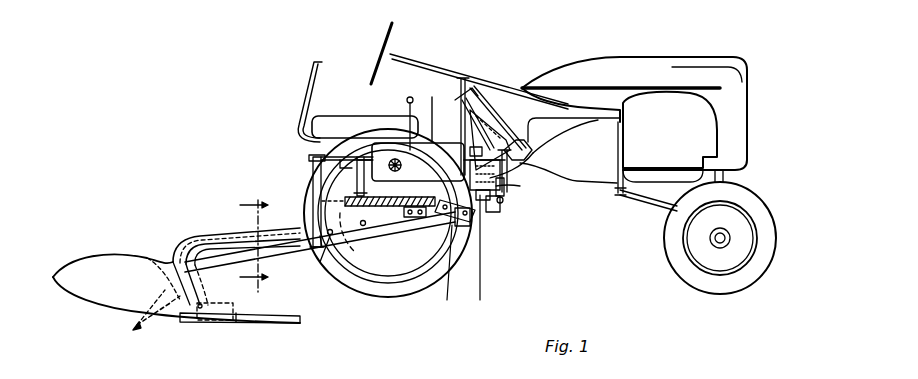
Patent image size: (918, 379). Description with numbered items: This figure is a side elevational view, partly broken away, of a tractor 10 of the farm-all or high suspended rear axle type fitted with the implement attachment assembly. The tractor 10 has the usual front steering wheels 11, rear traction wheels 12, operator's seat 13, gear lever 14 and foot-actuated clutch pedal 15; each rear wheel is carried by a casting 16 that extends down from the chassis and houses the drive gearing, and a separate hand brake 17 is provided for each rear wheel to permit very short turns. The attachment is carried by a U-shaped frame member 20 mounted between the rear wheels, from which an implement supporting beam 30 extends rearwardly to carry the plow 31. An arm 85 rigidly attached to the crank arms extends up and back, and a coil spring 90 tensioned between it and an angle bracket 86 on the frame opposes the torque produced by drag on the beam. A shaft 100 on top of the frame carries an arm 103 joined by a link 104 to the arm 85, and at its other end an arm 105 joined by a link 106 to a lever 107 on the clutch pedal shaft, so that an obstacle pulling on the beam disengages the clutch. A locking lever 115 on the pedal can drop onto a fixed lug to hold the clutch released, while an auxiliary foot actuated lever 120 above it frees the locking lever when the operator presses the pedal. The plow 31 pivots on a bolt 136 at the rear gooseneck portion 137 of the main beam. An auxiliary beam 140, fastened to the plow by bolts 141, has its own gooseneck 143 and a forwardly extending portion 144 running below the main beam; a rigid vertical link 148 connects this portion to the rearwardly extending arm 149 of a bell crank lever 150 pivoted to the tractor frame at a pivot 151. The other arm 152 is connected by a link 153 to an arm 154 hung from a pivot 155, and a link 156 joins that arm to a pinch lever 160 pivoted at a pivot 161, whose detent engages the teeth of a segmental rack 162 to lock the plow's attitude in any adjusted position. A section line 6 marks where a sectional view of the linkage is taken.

The tractor 10 is at (652, 62).
The front steering wheels 11 is at (724, 292).
The rear traction wheels 12 is at (400, 297).
The operator's seat 13 is at (325, 118).
The gear lever 14 is at (433, 97).
The foot-actuated clutch pedal 15 is at (466, 130).
The castings 16 is at (380, 262).
The hand brake 17 is at (410, 96).
The U-shaped frame member 20 is at (470, 222).
The implement supporting beam 30 is at (208, 236).
The plow 31 is at (250, 322).
The arm 85 is at (426, 240).
The angle brackets 86 is at (389, 174).
The coil spring 90 is at (352, 258).
The shaft 100 is at (490, 222).
The arm 103 is at (476, 238).
The link 104 is at (462, 224).
The arm 105 is at (496, 208).
The link 106 is at (501, 200).
The lever 107 is at (498, 157).
The locking lever 115 is at (470, 152).
The auxiliary foot actuated lever 120 is at (482, 108).
The bolt 136 is at (198, 316).
The gooseneck portion 137 is at (190, 262).
The auxiliary beam 140 is at (218, 285).
The bolts 141 is at (147, 316).
The gooseneck 143 is at (152, 272).
The forwardly extending portion 144 is at (318, 247).
The link 148 is at (312, 214).
The rearwardly extending arm 149 is at (340, 155).
The bell crank lever 150 is at (330, 164).
The pivot 151 is at (362, 160).
The arm 152 is at (384, 160).
The link 153 is at (330, 262).
The arm 154 is at (476, 178).
The pivot 155 is at (507, 190).
The link 156 is at (517, 187).
The pinch lever 160 is at (512, 95).
The pivot 161 is at (537, 173).
The segmental rack 162 is at (530, 146).
The section line 6- 6 is at (254, 240).